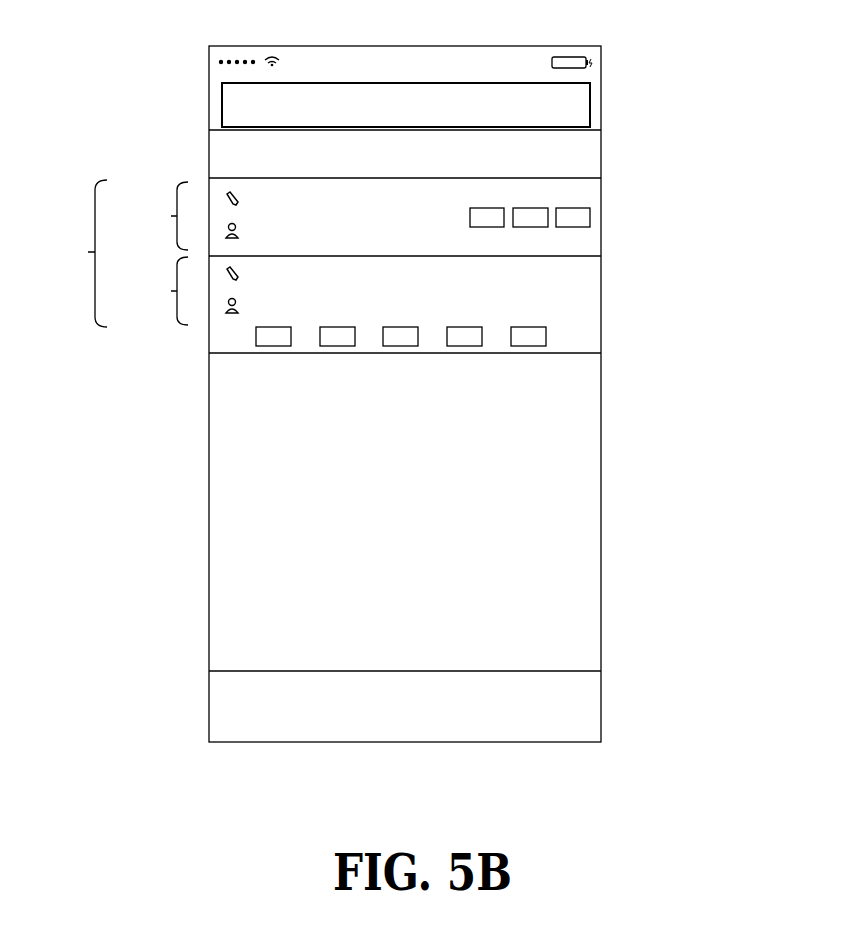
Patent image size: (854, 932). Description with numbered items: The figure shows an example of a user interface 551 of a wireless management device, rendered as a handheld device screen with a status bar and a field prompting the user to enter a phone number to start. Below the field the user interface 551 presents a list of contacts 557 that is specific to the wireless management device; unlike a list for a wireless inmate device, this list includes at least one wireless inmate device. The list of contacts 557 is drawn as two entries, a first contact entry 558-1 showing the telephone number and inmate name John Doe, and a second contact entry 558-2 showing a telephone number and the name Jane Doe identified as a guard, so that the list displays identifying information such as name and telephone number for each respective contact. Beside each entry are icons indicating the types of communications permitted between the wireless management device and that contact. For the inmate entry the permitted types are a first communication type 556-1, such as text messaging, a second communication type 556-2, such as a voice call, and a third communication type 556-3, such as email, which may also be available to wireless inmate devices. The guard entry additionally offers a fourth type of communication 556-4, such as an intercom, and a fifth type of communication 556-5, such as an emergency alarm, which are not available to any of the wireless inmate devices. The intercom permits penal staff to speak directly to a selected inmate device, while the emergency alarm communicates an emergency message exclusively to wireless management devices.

The user interface 551 is at (118, 49).
The first communication type 556-1 is at (487, 208).
The second communication type 556-2 is at (590, 218).
The third communication type 556-3 is at (530, 227).
The fourth type of communication 556-4 is at (464, 327).
The fifth type of communication 556-5 is at (528, 327).
The list of contacts 557 is at (95, 252).
The contact entry 558-1 is at (173, 217).
The contact entry 558-2 is at (173, 292).